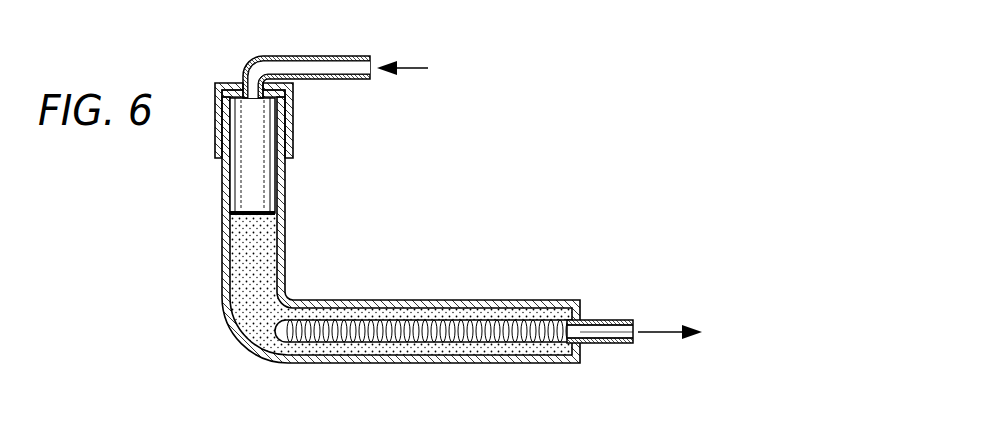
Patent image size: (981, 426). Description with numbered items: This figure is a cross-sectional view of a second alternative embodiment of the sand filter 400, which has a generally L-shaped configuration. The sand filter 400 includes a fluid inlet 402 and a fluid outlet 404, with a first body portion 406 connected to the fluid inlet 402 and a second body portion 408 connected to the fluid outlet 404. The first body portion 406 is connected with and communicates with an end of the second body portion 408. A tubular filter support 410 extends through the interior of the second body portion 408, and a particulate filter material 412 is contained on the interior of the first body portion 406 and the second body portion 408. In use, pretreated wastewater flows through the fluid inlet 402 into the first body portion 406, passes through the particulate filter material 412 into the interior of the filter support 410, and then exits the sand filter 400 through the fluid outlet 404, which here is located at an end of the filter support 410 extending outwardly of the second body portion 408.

The sand filter 400 is at (362, 232).
The fluid inlet 402 is at (249, 62).
The fluid outlet 404 is at (607, 320).
The first body portion 406 is at (288, 178).
The second body portion 408 is at (505, 300).
The filter support 410 is at (396, 320).
The particulate filter material 412 is at (242, 278).